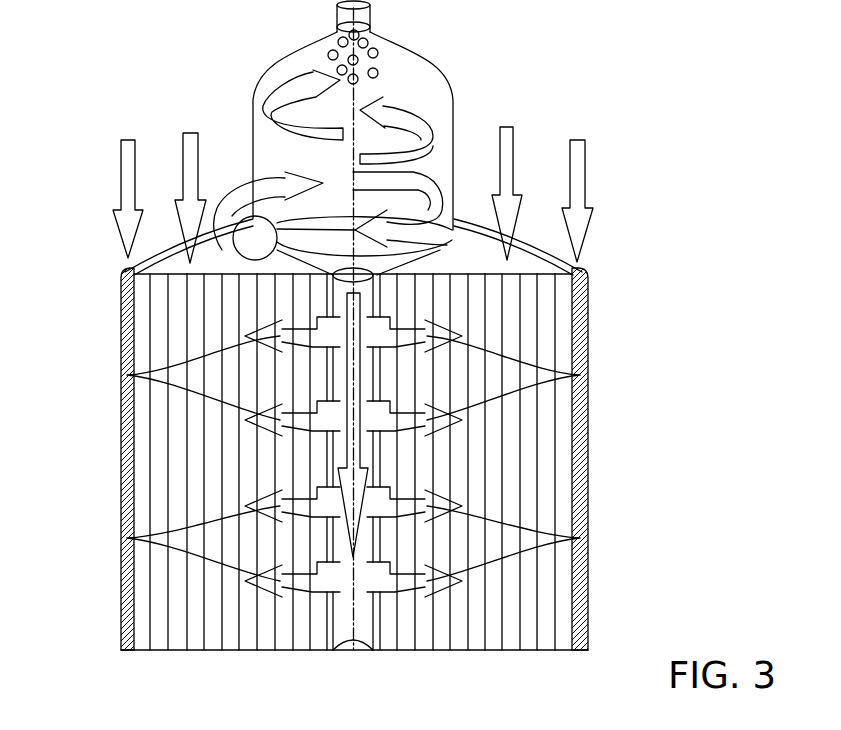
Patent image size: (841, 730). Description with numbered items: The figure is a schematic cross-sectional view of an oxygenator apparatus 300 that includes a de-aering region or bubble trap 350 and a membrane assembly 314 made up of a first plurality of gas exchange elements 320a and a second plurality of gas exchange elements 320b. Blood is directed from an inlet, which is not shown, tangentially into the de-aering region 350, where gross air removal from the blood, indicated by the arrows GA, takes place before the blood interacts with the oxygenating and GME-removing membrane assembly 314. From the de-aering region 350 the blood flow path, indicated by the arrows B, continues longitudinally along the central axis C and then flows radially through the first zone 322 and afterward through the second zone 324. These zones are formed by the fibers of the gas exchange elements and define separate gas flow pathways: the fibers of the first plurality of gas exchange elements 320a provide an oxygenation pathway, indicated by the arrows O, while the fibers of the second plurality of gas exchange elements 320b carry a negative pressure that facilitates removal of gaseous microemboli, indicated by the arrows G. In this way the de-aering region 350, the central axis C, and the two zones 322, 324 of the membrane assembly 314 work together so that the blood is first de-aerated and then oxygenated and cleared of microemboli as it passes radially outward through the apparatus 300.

The oxygenator apparatus 300 is at (105, 80).
The membrane assembly 314 is at (585, 630).
The first plurality of gas exchange elements 320a is at (557, 478).
The second plurality of gas exchange elements 320b is at (587, 423).
The first zone 322 is at (327, 657).
The second zone 324 is at (121, 657).
The de-aering region 350 is at (375, 42).
The blood flow path arrows B is at (598, 538).
The central axis C is at (375, 655).
The GME removal arrows G is at (586, 180).
The oxygenation pathway arrows O is at (513, 148).
The gross air removal arrows GA is at (415, 177).